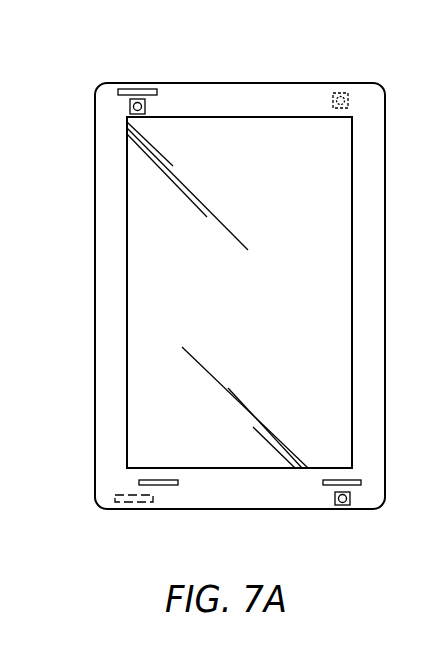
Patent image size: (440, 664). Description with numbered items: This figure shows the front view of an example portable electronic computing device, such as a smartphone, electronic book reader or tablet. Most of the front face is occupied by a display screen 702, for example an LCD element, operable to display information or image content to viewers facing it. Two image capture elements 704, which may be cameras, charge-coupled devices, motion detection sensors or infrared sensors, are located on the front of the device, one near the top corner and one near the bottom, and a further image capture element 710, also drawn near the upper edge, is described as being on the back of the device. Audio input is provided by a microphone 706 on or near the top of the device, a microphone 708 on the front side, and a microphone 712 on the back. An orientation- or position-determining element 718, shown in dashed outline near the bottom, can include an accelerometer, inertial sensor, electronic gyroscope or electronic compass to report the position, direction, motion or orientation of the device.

The display screen 702 is at (127, 348).
The image capture elements 704 is at (130, 106).
The microphone 706 is at (148, 89).
The microphone 708 is at (362, 483).
The image capture element 710 is at (340, 92).
The microphone 712 is at (165, 487).
The orientation- or position-determining element 718 is at (135, 503).